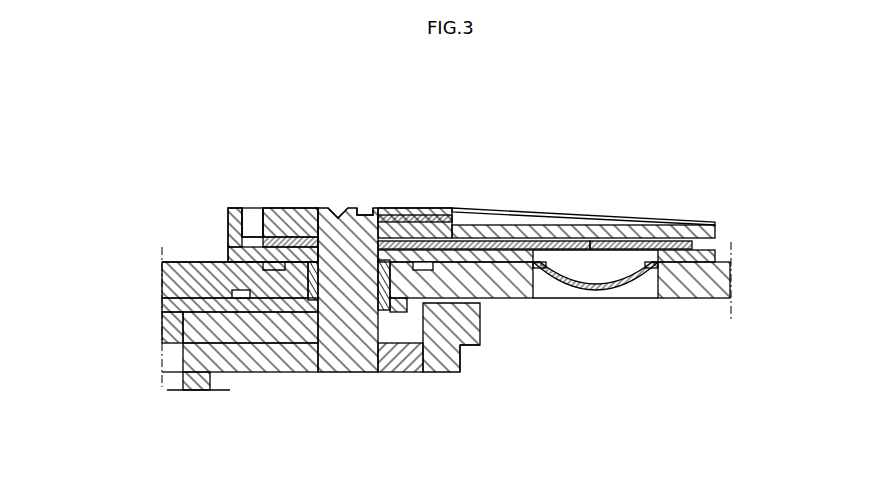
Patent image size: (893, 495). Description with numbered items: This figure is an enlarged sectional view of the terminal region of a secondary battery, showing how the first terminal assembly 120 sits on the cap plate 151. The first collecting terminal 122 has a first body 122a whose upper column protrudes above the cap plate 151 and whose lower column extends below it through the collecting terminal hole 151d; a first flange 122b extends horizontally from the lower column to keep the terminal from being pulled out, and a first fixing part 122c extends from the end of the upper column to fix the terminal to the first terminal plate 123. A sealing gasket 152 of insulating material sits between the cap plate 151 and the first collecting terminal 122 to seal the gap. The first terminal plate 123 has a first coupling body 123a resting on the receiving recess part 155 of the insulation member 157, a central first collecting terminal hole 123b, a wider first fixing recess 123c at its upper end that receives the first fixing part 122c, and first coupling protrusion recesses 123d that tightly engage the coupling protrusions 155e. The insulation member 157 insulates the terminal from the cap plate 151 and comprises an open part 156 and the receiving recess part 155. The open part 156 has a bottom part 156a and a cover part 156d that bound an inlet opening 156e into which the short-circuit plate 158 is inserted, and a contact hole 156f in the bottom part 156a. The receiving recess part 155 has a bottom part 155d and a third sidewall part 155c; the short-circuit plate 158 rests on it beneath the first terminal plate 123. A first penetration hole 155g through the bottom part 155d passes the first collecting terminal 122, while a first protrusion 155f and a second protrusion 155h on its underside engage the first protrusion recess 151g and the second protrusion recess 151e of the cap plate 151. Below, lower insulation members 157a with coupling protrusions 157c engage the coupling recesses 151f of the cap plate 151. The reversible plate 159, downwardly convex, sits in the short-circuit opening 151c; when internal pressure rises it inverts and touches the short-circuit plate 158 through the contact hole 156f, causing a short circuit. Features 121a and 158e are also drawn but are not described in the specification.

The first terminal assembly 120 is at (222, 186).
The guide portion 121a is at (380, 330).
The first collecting terminal 122 is at (338, 433).
The first body 122a is at (340, 292).
The first flange 122b is at (267, 333).
The first fixing part 122c is at (303, 343).
The first terminal plate 123 is at (417, 145).
The first coupling body 123a is at (400, 208).
The first collecting terminal hole 123b is at (328, 208).
The first fixing recess 123c is at (370, 215).
The first coupling protrusion recesses 123d is at (292, 187).
The cap plate 151 is at (695, 293).
The short-circuit opening 151c is at (658, 290).
The collecting terminal hole 151d is at (393, 348).
The second protrusion recess 151e is at (478, 298).
The coupling recesses 151f is at (467, 367).
The first protrusion recess 151g is at (163, 317).
The sealing gasket 152 is at (417, 345).
The receiving recess part 155 is at (80, 170).
The third sidewall part 155c is at (233, 235).
The bottom part 155d is at (245, 256).
The coupling protrusions 155e is at (233, 230).
The first protrusion 155f is at (163, 255).
The first penetration hole 155g is at (240, 249).
The second protrusion 155h is at (462, 303).
The open part 156 is at (508, 206).
The bottom part 156a is at (673, 267).
The cover part 156d is at (681, 222).
The inlet opening 156e is at (717, 242).
The contact hole 156f is at (678, 270).
The insulation member 157 is at (378, 142).
The lower insulation members 157a is at (442, 362).
The coupling protrusions 157c is at (463, 350).
The short-circuit plate 158 is at (590, 243).
The substrate band 158e is at (420, 215).
The reversible plate 159 is at (615, 290).